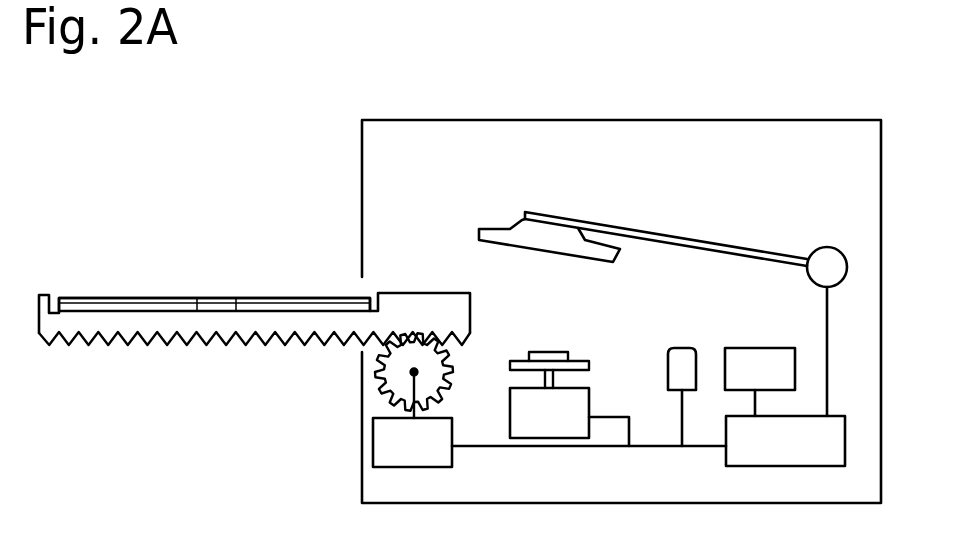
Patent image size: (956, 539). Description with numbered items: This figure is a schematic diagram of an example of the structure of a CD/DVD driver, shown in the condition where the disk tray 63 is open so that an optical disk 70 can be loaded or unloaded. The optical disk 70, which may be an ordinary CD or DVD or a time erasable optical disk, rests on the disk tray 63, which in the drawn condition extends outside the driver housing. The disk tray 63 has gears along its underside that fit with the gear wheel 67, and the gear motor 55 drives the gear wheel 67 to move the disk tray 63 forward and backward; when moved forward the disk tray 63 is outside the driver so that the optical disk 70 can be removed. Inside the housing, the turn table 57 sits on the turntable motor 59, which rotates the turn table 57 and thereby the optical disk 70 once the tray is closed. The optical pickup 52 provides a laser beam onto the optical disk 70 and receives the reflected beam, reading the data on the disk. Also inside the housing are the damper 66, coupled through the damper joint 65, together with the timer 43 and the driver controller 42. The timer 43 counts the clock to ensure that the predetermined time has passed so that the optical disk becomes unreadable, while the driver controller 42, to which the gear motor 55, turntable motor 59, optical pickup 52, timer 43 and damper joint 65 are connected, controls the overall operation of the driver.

The driver controller 42 is at (755, 466).
The timer 43 is at (767, 392).
The optical pickup 52 is at (696, 386).
The gear motor 55 is at (403, 467).
The turn table 57 is at (589, 365).
The turntable motor 59 is at (589, 402).
The disk tray 63 is at (88, 335).
The damper joint 65 is at (832, 248).
The damper 66 is at (495, 229).
The gear wheel 67 is at (446, 384).
The optical disk 70 is at (148, 305).